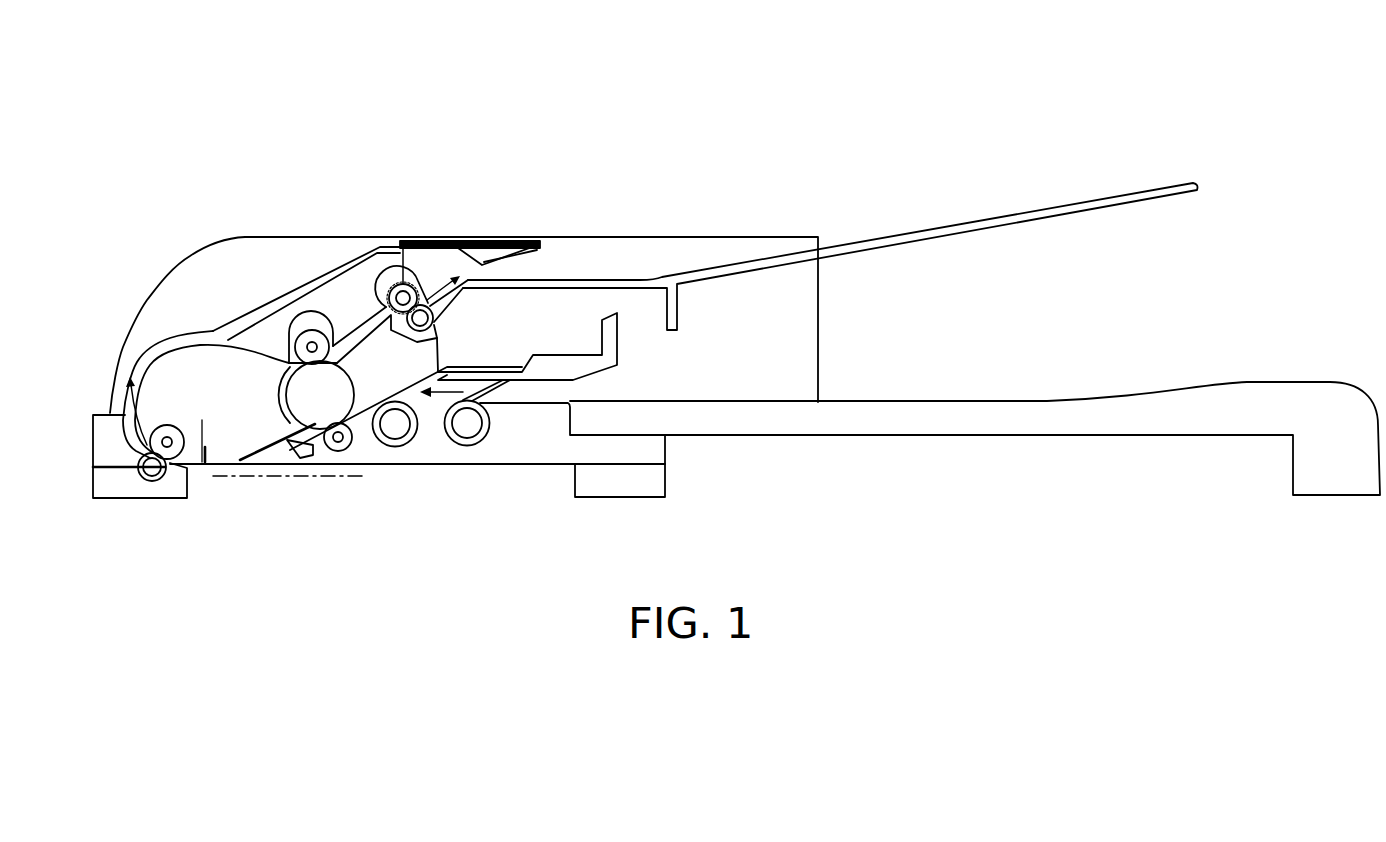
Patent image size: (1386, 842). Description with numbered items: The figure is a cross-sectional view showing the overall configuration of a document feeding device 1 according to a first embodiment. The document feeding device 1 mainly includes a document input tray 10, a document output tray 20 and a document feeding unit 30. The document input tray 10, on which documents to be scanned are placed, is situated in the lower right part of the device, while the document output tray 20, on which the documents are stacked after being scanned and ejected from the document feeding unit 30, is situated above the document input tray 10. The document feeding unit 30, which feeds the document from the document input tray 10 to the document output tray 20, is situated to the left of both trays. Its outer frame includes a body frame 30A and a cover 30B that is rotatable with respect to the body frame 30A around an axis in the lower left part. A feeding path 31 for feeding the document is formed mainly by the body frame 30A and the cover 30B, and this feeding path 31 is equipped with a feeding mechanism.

The document feeding device 1 is at (165, 112).
The document input tray 10 is at (1013, 382).
The document output tray 20 is at (965, 203).
The document feeding unit 30 is at (147, 282).
The body frame 30A is at (87, 407).
The cover 30B is at (290, 233).
The feeding path 31 is at (143, 343).